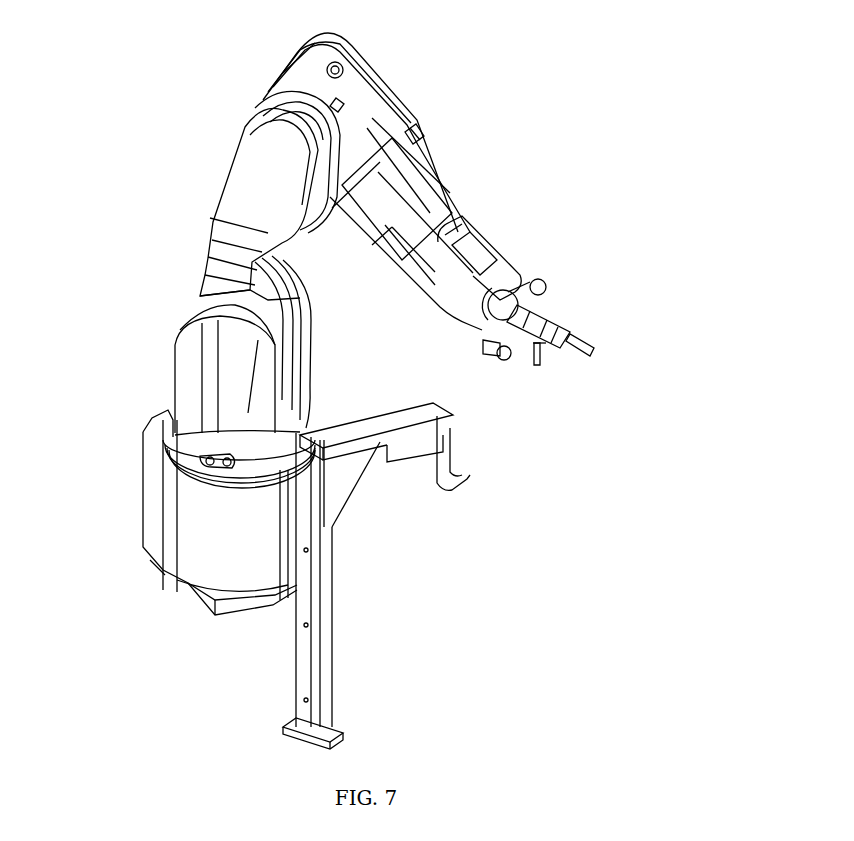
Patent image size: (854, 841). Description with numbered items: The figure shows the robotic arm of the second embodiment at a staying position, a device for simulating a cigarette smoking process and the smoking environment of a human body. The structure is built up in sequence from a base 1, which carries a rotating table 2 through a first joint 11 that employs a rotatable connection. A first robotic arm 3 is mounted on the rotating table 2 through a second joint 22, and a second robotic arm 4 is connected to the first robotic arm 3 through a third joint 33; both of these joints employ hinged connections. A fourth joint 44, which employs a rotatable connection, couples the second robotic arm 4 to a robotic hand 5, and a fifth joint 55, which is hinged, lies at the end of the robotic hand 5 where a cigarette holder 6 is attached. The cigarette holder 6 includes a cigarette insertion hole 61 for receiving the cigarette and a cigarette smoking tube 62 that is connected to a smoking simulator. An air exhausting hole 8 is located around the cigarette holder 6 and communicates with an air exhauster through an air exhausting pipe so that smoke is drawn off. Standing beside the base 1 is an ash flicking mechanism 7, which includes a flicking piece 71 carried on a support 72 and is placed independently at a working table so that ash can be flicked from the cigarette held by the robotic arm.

The base 1 is at (225, 530).
The first joint 11 is at (180, 450).
The rotating table 2 is at (210, 380).
The second joint 22 is at (230, 302).
The first robotic arm 3 is at (255, 192).
The third joint 33 is at (300, 115).
The second robotic arm 4 is at (355, 137).
The fourth joint 44 is at (378, 240).
The robotic hand 5 is at (457, 247).
The fifth joint 55 is at (500, 290).
The cigarette holder 6 is at (545, 312).
The cigarette insertion hole 61 is at (567, 337).
The cigarette smoking tube 62 is at (543, 360).
The ash flicking mechanism 7 is at (330, 598).
The flicking piece 71 is at (470, 432).
The support of flicking piece 72 is at (320, 678).
The air exhausting hole 8 is at (496, 352).